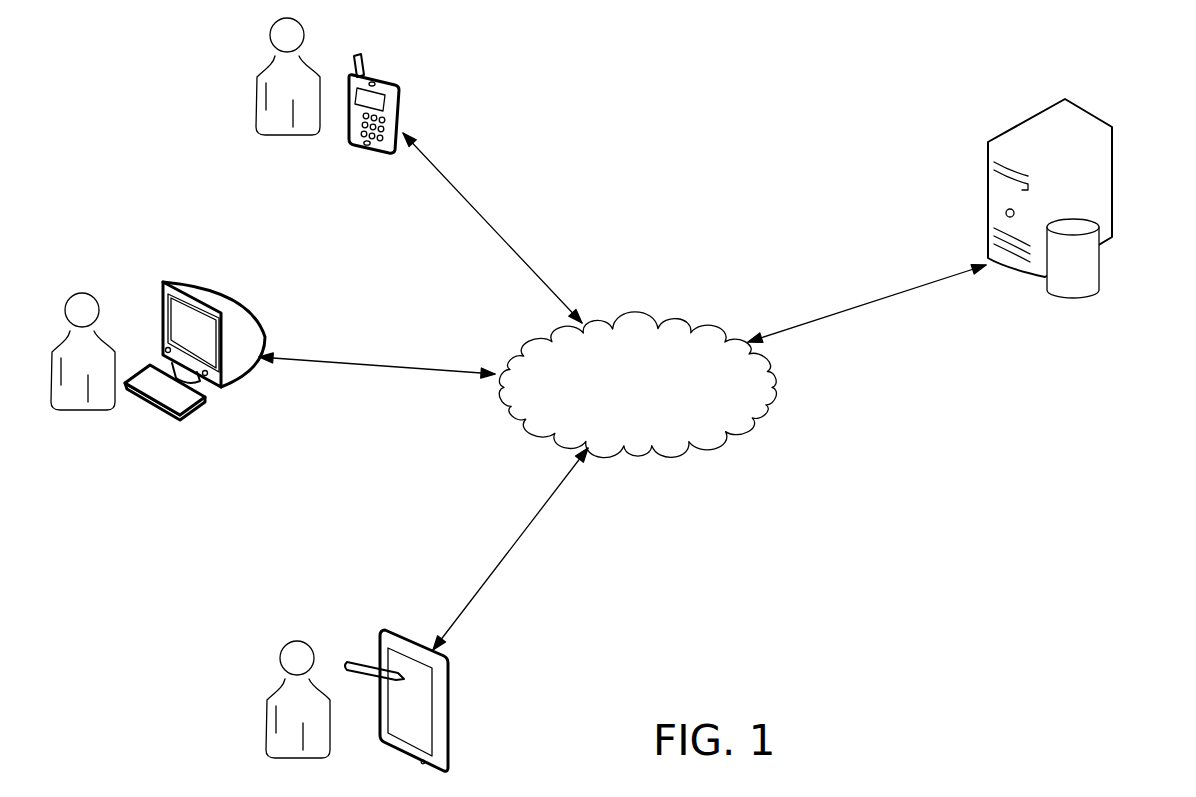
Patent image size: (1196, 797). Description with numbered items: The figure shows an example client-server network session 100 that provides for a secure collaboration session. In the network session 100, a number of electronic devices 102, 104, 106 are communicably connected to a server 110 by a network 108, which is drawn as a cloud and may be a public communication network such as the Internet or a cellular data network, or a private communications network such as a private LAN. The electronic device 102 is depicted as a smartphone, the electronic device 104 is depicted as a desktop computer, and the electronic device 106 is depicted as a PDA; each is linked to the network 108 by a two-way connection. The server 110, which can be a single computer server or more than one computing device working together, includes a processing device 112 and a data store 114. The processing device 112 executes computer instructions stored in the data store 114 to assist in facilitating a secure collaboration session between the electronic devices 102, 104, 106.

The network session 100 is at (757, 64).
The electronic device 102 is at (385, 77).
The electronic device 104 is at (232, 292).
The electronic device 106 is at (392, 630).
The network 108 is at (633, 320).
The server 110 is at (992, 296).
The processing device 112 is at (1088, 108).
The data store 114 is at (1098, 277).